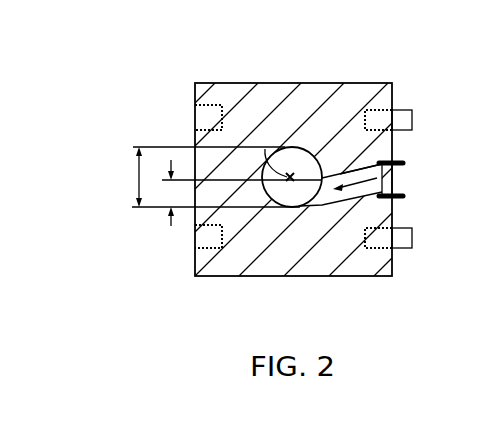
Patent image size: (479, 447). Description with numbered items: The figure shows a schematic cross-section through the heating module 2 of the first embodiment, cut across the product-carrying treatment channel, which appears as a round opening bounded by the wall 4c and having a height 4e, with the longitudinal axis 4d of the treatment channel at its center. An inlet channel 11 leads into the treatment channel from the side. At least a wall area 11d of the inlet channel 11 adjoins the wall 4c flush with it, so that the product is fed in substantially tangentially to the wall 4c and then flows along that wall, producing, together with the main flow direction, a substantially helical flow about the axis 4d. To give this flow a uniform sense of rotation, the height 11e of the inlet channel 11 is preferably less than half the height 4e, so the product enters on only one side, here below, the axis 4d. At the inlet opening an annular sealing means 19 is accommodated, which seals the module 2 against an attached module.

The heating module 2 is at (228, 92).
The wall of the treatment channel 4c is at (292, 158).
The longitudinal axis of the treatment channel 4d is at (265, 149).
The height of the treatment channel 4e is at (139, 182).
The inlet channel 11 is at (337, 200).
The wall area of the inlet channel 11d is at (372, 163).
The height of the inlet channel 11e is at (170, 190).
The annular sealing means 19 is at (403, 196).